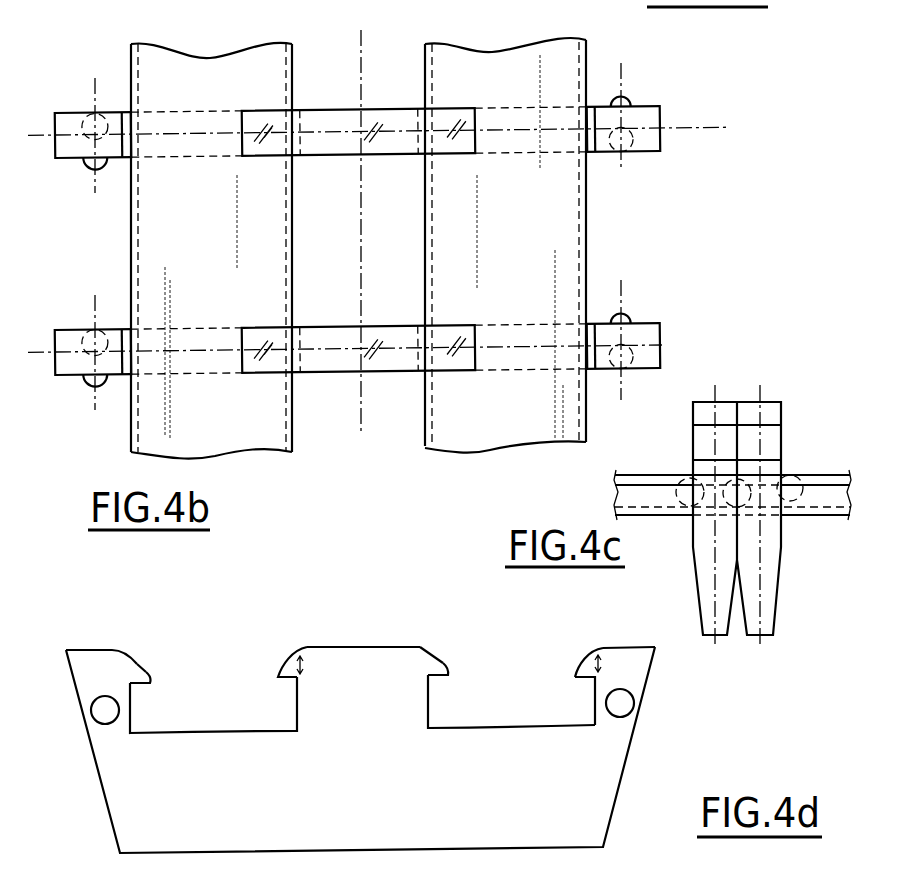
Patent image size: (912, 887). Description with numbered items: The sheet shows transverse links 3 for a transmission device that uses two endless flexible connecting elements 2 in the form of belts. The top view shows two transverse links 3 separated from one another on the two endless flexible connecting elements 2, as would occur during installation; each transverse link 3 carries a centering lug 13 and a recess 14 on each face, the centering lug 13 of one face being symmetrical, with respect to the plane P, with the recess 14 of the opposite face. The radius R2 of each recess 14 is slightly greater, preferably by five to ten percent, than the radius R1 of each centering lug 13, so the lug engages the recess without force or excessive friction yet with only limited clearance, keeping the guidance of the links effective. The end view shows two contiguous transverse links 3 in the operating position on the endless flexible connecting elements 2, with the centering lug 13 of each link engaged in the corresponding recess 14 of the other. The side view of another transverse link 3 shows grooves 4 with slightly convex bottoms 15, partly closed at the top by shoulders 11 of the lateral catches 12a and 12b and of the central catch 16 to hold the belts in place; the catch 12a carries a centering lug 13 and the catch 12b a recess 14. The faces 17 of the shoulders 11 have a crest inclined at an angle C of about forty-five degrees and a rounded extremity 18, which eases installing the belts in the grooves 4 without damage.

In FIG. 4b, the endless flexible connecting element 2 is at (192, 83).
In FIG. 4c, the endless flexible connecting element 2 is at (820, 497).
In FIG. 4b, the transverse link 3 is at (326, 111).
In FIG. 4c, the transverse link 3 is at (780, 593).
In FIG. 4d, the transverse link 3 is at (612, 820).
In FIG. 4d, the groove 4 is at (168, 712).
In FIG. 4d, the shoulder 11 is at (121, 671).
In FIG. 4d, the lateral catch 12a is at (87, 663).
In FIG. 4d, the lateral catch 12b is at (639, 653).
In FIG. 4b, the centering lug 13 is at (627, 97).
In FIG. 4c, the centering lug 13 is at (793, 473).
In FIG. 4d, the centering lug 13 is at (94, 716).
In FIG. 4b, the recess 14 is at (630, 151).
In FIG. 4c, the recess 14 is at (744, 478).
In FIG. 4d, the recess 14 is at (633, 706).
In FIG. 4d, the bottom 15 is at (527, 707).
In FIG. 4d, the central catch 16 is at (372, 660).
In FIG. 4d, the face 17 is at (141, 670).
In FIG. 4d, the rounded extremity 18 is at (282, 673).
In FIG. 4b, the plane P is at (381, 113).
In FIG. 4b, the radius of centering lug R1 is at (85, 173).
In FIG. 4b, the radius of recess R2 is at (90, 126).
In FIG. 4d, the angle C is at (460, 663).